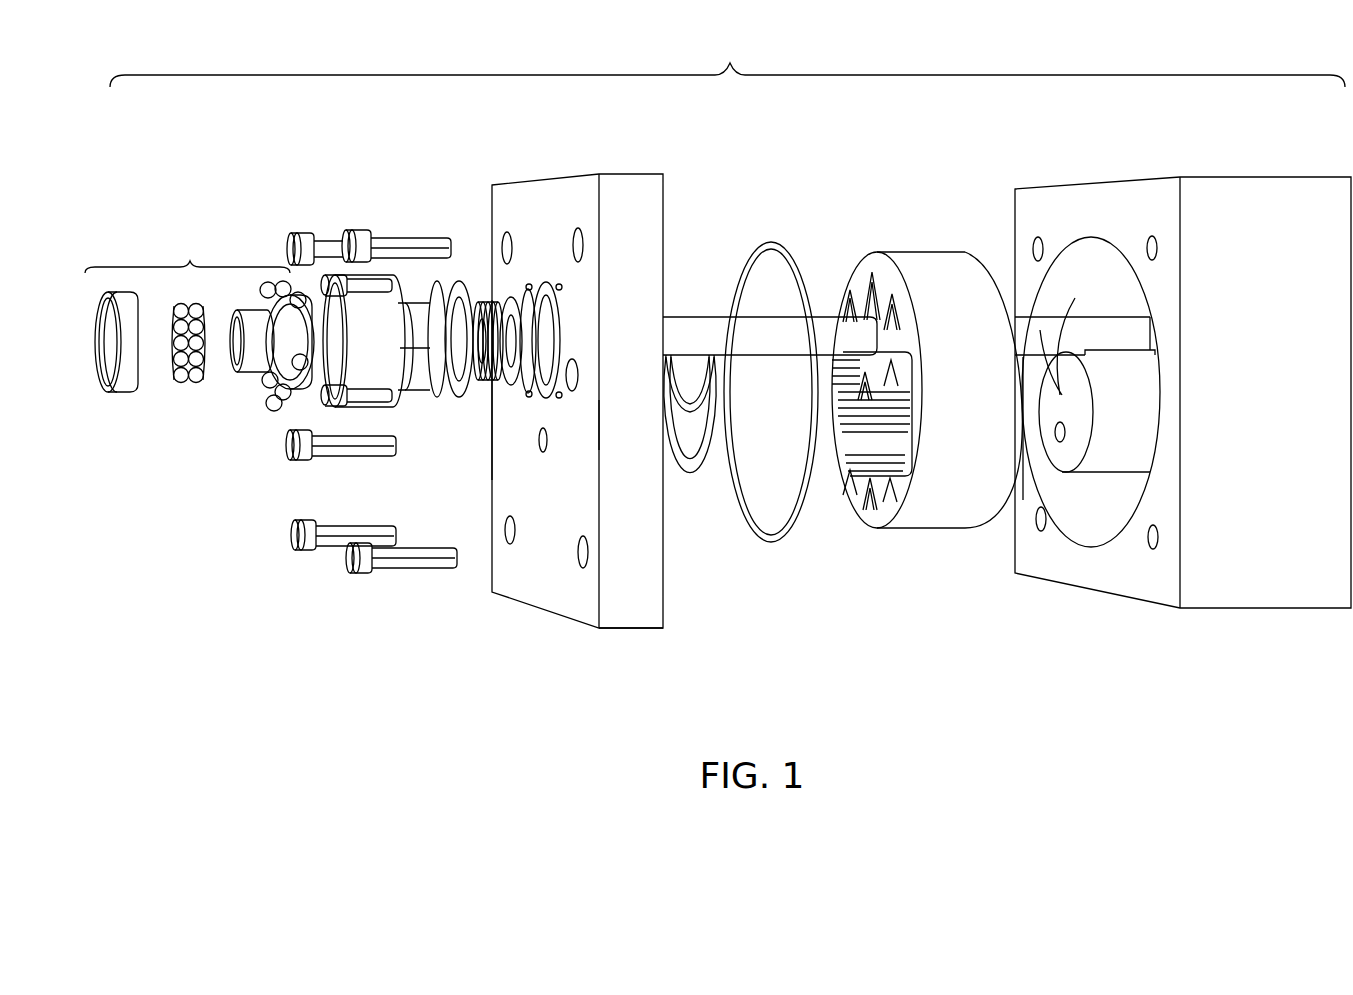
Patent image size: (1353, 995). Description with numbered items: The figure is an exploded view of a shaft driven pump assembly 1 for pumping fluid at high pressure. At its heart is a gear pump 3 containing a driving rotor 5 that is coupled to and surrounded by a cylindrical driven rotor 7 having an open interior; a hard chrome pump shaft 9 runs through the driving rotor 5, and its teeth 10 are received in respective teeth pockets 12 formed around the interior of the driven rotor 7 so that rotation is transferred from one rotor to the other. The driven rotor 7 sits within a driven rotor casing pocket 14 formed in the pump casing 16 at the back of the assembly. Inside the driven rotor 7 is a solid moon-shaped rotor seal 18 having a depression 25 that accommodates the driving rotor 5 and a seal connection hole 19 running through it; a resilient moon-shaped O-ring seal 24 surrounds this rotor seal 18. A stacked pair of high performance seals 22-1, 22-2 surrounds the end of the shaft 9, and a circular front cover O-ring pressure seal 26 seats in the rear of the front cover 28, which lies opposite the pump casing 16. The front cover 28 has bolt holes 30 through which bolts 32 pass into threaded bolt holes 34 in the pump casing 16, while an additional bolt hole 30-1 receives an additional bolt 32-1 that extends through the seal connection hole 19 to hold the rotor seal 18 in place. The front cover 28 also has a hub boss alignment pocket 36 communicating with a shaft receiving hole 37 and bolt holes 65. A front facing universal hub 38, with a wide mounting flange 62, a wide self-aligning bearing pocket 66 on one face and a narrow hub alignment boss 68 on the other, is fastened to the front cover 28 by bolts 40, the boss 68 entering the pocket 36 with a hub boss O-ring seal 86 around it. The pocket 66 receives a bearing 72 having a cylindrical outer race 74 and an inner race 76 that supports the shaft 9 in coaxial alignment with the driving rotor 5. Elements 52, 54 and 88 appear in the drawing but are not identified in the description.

The pump assembly 1 is at (727, 57).
The gear pump 3 is at (927, 379).
The driving rotor 5 is at (885, 335).
The driven rotor 7 is at (938, 528).
The pump shaft 9 is at (1145, 327).
The teeth 10 is at (880, 287).
The teeth pockets 12 is at (898, 306).
The driven rotor casing pocket 14 is at (1135, 490).
The pump casing 16 is at (1278, 195).
The rotor seal 18 is at (1145, 393).
The seal connection hole 19 is at (1065, 432).
The high performance seal 22-1 is at (496, 290).
The high performance seal 22-2 is at (494, 495).
The O-ring seal 24 is at (708, 478).
The depression 25 is at (1060, 360).
The front cover O-ring pressure seal 26 is at (778, 243).
The front cover 28 is at (662, 608).
The bolt holes 30 is at (508, 232).
The additional bolt hole 30-1 is at (550, 445).
The bolts 32 is at (325, 233).
The additional bolt 32-1 is at (290, 455).
The threaded bolt holes 34 is at (1038, 237).
The hub boss alignment pocket 36 is at (560, 315).
The shaft receiving hole 37 is at (562, 332).
The front facing universal hub 38 is at (448, 282).
The bolts 40 is at (395, 300).
The port 52 is at (543, 452).
The port 54 is at (578, 375).
The mounting flange 62 is at (390, 405).
The bolt holes 65 is at (560, 292).
The self-aligning bearing pocket 66 is at (402, 405).
The hub alignment boss 68 is at (441, 278).
The bearing 72 is at (187, 254).
The outer race 74 is at (120, 395).
The inner race 76 is at (250, 397).
The hub boss O-ring seal 86 is at (486, 380).
The ball cage 88 is at (190, 384).